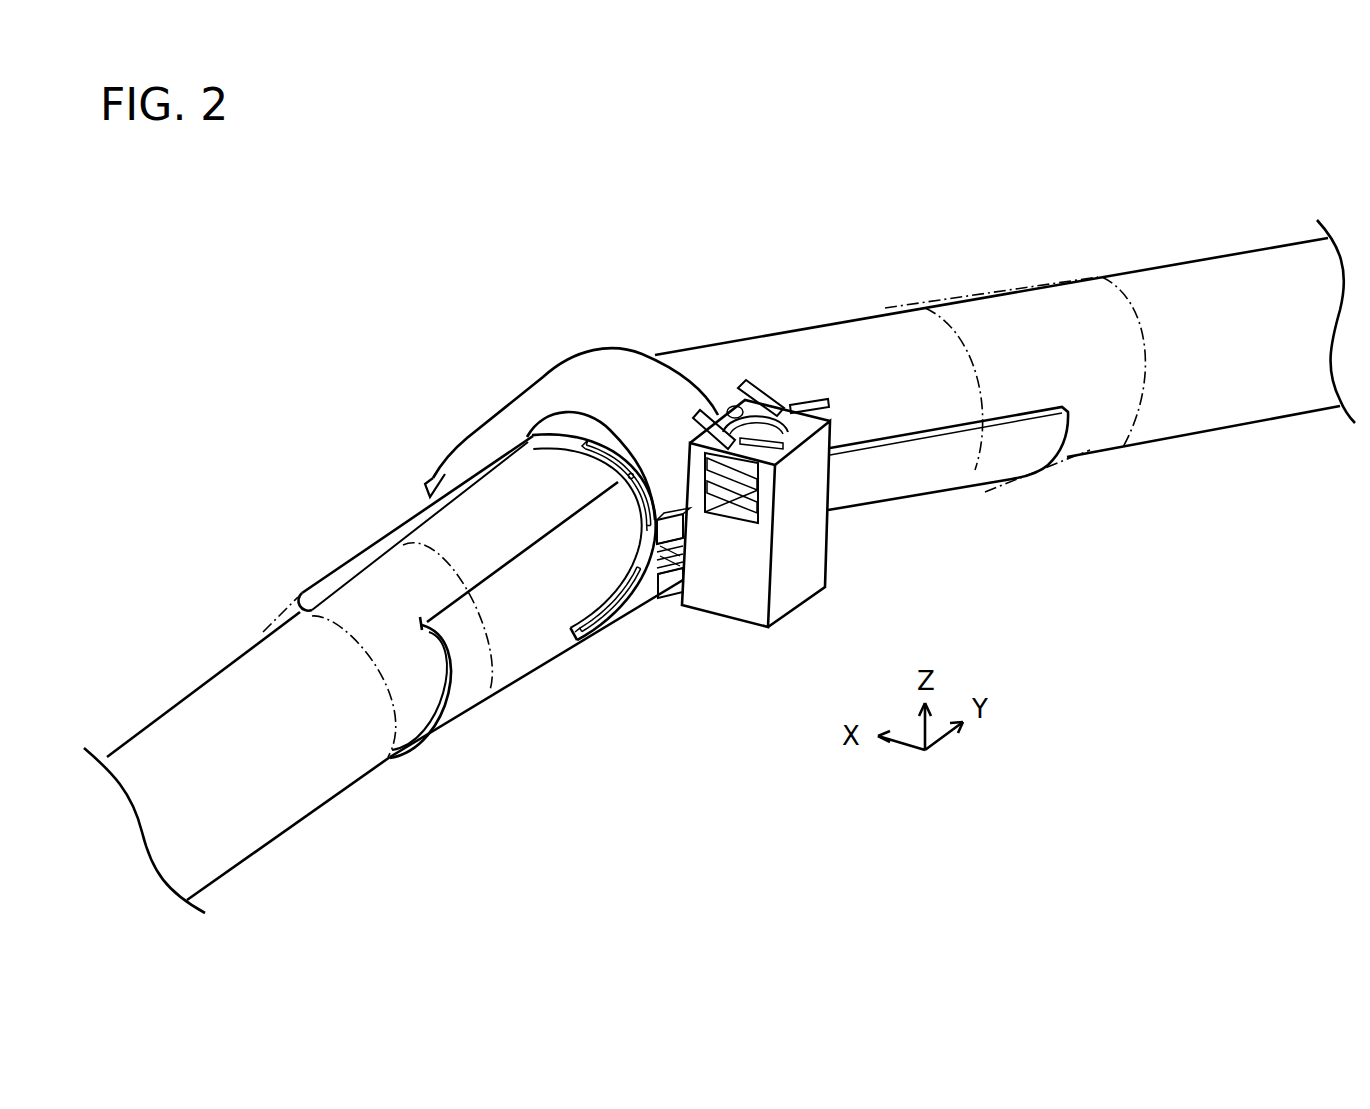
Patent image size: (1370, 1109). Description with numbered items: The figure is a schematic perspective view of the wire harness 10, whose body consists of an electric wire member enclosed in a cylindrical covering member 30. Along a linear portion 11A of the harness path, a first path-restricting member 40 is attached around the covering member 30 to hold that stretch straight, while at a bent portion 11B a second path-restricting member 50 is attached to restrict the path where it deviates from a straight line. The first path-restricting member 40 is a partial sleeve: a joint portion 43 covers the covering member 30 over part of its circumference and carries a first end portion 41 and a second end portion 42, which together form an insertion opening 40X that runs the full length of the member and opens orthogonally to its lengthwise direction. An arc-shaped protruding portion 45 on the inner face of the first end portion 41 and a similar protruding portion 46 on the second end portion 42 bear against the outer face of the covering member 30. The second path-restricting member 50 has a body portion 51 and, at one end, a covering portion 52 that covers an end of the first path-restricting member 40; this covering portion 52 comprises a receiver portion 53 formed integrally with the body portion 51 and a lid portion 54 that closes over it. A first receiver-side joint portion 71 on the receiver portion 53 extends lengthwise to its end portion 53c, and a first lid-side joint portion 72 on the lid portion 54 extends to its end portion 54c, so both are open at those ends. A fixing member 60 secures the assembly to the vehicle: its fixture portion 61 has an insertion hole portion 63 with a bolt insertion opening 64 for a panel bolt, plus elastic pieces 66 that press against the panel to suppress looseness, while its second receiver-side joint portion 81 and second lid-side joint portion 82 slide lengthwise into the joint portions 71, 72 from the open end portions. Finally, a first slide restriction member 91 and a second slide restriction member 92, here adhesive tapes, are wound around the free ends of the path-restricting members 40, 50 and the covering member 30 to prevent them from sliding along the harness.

The wire harness 10 is at (1274, 161).
The linear portion 11A is at (440, 525).
The bent portion 11B is at (1005, 335).
The covering member 30 is at (240, 717).
The first path-restricting member 40 is at (475, 594).
The insertion opening 40X is at (510, 553).
The first end portion 41 is at (400, 525).
The second end portion 42 is at (391, 676).
The joint portion 43 is at (505, 668).
The protruding portion 45 is at (306, 614).
The protruding portion 46 is at (415, 640).
The second path-restricting member 50 is at (948, 472).
The body portion 51 is at (900, 450).
The covering portion 52 is at (551, 412).
The receiver portion 53 is at (611, 583).
The end portion of the receiver portion 53c is at (574, 648).
The lid portion 54 is at (607, 375).
The end portion of the lid portion 54c is at (470, 440).
The fixing member 60 is at (785, 490).
The fixture portion 61 is at (820, 565).
The insertion hole portion 63 is at (745, 525).
The bolt insertion opening 64 is at (727, 416).
The elastic pieces 66 is at (766, 400).
The first receiver-side joint portion 71 is at (620, 620).
The first lid-side joint portion 72 is at (630, 474).
The second receiver-side joint portion 81 is at (666, 598).
The second lid-side joint portion 82 is at (670, 514).
The first slide restriction member 91 is at (333, 572).
The second slide restriction member 92 is at (1057, 275).